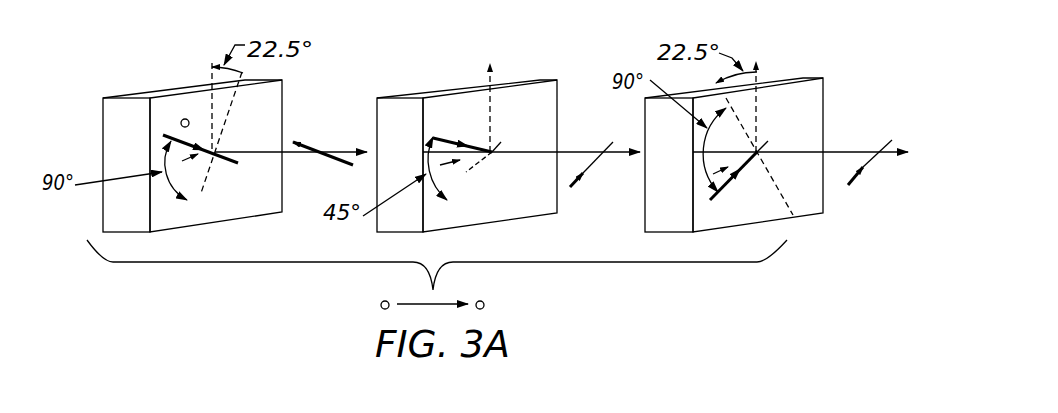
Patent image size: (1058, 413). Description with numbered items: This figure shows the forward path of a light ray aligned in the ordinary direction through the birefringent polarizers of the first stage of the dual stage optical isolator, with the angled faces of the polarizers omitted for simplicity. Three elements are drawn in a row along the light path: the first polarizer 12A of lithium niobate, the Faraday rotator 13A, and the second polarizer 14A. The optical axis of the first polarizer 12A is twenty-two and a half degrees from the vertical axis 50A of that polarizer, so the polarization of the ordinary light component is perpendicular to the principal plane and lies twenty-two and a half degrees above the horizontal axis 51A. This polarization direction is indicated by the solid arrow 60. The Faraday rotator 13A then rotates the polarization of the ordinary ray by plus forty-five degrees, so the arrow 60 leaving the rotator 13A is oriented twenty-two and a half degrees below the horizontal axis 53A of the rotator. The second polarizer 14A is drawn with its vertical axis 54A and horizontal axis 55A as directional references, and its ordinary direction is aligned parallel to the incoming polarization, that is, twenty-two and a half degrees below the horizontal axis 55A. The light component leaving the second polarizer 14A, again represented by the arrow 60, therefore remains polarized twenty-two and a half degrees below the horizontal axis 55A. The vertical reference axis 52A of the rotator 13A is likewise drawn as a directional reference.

The first polarizer 12A is at (268, 110).
The Faraday rotator 13A is at (547, 130).
The second polarizer 14A is at (814, 95).
The vertical axis 50A is at (210, 80).
The horizontal axis 51A is at (201, 193).
The reference axis of second wave plate 52A is at (491, 117).
The horizontal axis 53A is at (471, 158).
The vertical axis 54A is at (758, 120).
The horizontal axis 55A is at (746, 161).
The solid arrow 60 is at (297, 143).